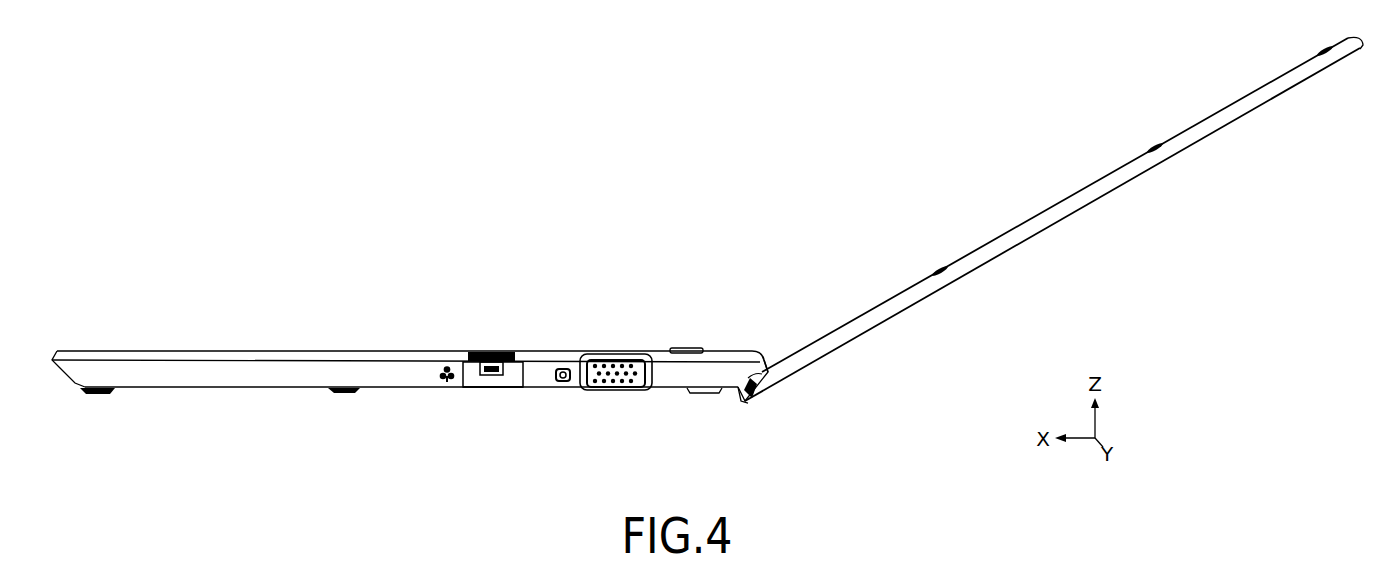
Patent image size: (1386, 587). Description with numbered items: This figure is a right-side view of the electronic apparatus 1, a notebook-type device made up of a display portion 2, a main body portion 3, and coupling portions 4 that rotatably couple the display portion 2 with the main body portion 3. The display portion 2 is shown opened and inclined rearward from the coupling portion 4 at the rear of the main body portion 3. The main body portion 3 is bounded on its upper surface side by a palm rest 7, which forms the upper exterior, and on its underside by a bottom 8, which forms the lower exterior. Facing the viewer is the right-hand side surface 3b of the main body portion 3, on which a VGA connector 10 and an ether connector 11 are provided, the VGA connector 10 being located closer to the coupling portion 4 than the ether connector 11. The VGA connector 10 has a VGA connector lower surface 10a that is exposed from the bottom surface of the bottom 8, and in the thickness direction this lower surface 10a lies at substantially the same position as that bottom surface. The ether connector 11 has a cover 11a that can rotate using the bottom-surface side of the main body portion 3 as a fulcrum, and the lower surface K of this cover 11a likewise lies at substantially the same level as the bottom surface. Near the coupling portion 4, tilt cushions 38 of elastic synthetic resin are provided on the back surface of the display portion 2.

The electronic apparatus 1 is at (714, 186).
The display portion 2 is at (1023, 224).
The main body portion 3 is at (372, 351).
The right-hand side surface 3b is at (315, 382).
The coupling portion 4 is at (768, 368).
The palm rest 7 is at (218, 351).
The bottom 8 is at (230, 388).
The VGA connector 10 is at (612, 351).
The VGA connector lower surface 10a is at (615, 390).
The ether connector 11 is at (490, 351).
The cover 11a is at (480, 382).
The lower surface K is at (509, 388).
The tilt cushion 38 is at (738, 400).